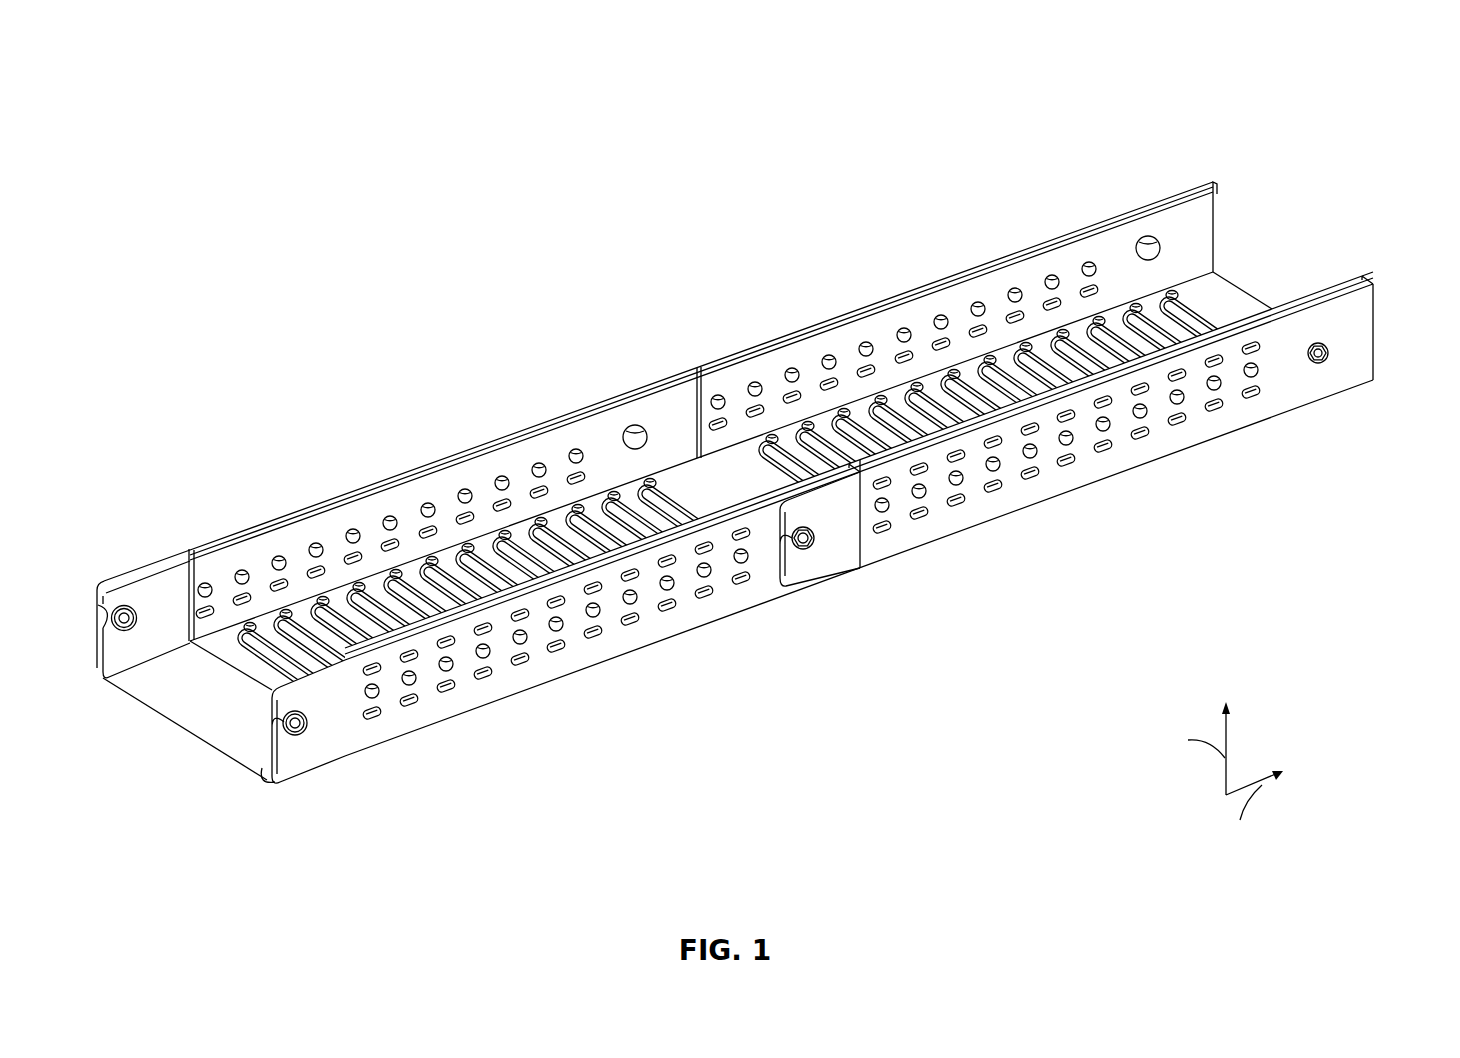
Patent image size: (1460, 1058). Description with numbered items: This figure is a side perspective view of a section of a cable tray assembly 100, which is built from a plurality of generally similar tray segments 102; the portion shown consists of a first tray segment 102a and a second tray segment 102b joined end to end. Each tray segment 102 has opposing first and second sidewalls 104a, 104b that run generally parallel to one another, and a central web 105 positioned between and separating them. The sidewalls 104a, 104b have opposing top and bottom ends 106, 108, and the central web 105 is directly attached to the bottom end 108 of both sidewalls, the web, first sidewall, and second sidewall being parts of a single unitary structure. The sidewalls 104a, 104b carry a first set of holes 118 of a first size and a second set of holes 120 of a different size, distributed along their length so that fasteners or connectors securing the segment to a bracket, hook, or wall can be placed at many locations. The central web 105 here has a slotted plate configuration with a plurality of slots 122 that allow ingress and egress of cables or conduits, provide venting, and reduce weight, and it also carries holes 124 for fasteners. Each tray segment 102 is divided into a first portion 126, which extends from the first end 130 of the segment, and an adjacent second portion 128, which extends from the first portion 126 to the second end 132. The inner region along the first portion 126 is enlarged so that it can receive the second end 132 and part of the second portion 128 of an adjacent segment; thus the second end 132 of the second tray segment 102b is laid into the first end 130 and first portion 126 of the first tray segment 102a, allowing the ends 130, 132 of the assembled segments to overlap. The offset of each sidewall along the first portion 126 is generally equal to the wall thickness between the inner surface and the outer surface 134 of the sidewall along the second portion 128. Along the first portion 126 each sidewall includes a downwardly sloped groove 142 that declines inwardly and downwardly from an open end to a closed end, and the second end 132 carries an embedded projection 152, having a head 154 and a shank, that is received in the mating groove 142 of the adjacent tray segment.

The cable tray assembly 100 is at (1018, 88).
The tray segment 102 is at (977, 512).
The first tray segment 102a is at (1111, 377).
The second tray segment 102b is at (445, 567).
The first sidewall 104a is at (1293, 383).
The second sidewall 104b is at (1192, 243).
The central web 105 is at (1224, 307).
The top end 106 is at (1202, 178).
The bottom end 108 is at (673, 637).
The holes 118 is at (1090, 262).
The holes 120 is at (1016, 312).
The slots 122 is at (647, 527).
The holes 124 is at (773, 436).
The first portion 126 is at (813, 575).
The second portion 128 is at (1108, 465).
The first end 130 is at (155, 710).
The second end 132 is at (1268, 300).
The outer surface 134 is at (1358, 367).
The downwardly sloped groove 142 is at (293, 722).
The embedded projection 152 is at (1330, 357).
The head 154 is at (1146, 238).